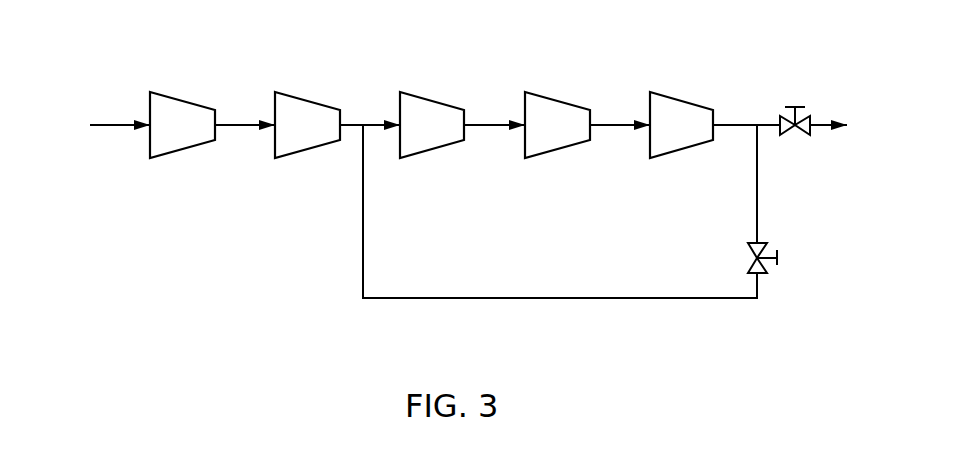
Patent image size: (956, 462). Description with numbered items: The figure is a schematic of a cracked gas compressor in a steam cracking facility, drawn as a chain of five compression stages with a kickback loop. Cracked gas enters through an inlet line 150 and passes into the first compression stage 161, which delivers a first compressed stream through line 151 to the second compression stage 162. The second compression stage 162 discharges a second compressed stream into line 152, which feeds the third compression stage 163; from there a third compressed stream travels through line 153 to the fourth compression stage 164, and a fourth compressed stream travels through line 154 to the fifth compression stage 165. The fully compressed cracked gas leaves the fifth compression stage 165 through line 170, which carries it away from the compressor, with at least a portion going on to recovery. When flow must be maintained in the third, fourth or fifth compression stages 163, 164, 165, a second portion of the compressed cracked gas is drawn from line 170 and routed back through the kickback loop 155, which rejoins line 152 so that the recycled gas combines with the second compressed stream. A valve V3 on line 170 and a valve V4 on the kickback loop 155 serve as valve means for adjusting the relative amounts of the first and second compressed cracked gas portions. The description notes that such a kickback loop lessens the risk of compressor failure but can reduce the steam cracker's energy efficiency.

The inlet stream 150 is at (125, 122).
The line for conveying a first compressed stream 151 is at (248, 122).
The line for conveying a second compressed stream 152 is at (373, 122).
The line for conveying a third compressed stream 153 is at (498, 122).
The line for conveying a fourth compressed stream 154 is at (622, 122).
The kickback loop 155 is at (508, 300).
The first compression stage 161 is at (165, 160).
The second compression stage 162 is at (292, 158).
The third compression stage 163 is at (412, 160).
The fourth compression stage 164 is at (540, 160).
The fifth compression stage 165 is at (663, 160).
The line for conveying compressed cracked gas 170 is at (747, 122).
The valve V3 is at (802, 105).
The valve V4 is at (778, 262).